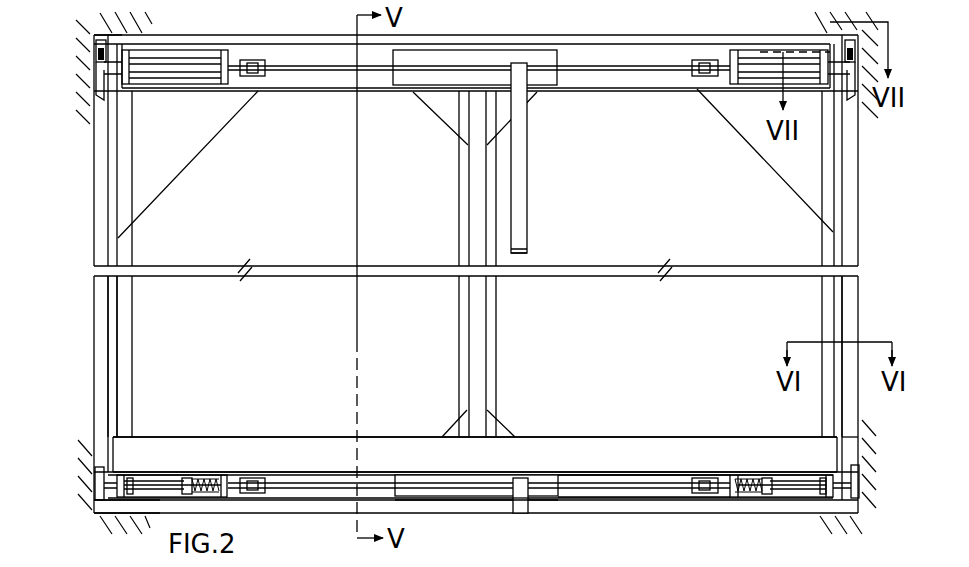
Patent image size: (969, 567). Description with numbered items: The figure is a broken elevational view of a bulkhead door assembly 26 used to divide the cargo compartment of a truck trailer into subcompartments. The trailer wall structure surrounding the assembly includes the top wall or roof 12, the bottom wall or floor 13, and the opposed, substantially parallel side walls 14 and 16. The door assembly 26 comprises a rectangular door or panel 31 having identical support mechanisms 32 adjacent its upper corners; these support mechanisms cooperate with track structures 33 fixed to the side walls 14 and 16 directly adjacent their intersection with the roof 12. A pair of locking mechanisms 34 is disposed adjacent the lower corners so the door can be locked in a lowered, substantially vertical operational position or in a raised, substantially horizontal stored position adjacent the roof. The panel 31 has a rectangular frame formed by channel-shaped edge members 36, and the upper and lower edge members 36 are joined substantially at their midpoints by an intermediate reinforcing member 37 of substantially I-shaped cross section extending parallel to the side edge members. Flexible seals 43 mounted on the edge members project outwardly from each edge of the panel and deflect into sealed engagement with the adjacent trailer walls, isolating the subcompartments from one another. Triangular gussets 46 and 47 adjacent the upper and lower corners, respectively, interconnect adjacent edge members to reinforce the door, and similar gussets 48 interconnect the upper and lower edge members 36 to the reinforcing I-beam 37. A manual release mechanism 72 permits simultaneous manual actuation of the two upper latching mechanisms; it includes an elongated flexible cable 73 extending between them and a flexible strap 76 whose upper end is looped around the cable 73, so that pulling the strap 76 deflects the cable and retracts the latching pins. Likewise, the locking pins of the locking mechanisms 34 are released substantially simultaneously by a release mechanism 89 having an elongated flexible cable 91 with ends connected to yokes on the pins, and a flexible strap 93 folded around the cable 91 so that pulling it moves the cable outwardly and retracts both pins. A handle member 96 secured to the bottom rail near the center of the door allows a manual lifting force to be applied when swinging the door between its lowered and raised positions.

The top wall 12 is at (95, 22).
The bottom wall 13 is at (124, 522).
The side wall 14 is at (866, 455).
The side wall 16 is at (91, 485).
The bulkhead door assembly 26 is at (560, 522).
The panel 31 is at (146, 362).
The support mechanism 32 is at (163, 42).
The track structure 33 is at (93, 52).
The locking mechanism 34 is at (173, 466).
The edge member 36 is at (117, 319).
The intermediate reinforcing member 37 is at (476, 362).
The flexible seal 43 is at (97, 222).
The triangular gusset 46 is at (186, 144).
The triangular gusset 47 is at (132, 434).
The gusset 48 is at (449, 108).
The manual release mechanism 72 is at (530, 172).
The flexible cable 73 is at (622, 66).
The flexible strap 76 is at (527, 218).
The release mechanism 89 is at (505, 514).
The flexible cable 91 is at (656, 470).
The flexible strap 93 is at (521, 496).
The handle member 96 is at (441, 480).